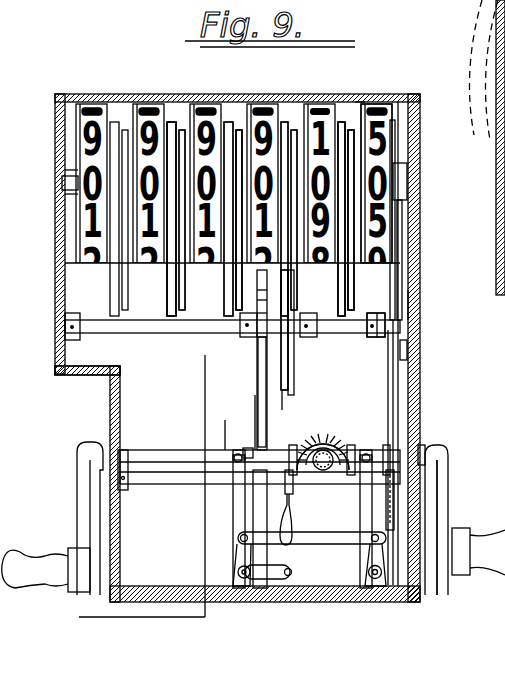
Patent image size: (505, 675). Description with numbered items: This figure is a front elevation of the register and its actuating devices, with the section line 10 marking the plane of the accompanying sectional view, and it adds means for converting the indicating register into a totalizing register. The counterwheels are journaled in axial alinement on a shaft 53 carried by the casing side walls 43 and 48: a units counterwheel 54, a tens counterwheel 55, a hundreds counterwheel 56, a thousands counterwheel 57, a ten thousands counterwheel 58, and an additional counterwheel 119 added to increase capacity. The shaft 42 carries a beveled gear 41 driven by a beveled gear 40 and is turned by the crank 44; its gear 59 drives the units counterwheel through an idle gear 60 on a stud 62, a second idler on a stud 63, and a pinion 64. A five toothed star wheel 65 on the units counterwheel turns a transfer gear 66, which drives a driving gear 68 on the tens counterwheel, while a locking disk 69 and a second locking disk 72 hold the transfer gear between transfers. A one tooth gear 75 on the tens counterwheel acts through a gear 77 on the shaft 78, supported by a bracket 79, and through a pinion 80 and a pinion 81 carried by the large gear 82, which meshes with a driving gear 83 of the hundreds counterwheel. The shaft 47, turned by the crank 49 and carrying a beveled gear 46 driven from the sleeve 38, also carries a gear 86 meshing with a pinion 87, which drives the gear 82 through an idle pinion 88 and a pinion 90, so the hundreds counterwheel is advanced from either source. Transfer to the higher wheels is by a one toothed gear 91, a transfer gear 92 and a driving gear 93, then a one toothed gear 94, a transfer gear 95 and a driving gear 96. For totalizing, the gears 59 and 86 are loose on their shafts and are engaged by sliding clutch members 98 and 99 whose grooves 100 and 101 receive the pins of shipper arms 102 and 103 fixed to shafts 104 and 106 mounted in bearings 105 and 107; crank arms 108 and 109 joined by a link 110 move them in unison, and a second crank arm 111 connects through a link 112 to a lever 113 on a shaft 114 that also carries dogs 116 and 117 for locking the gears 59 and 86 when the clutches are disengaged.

The section line 10 is at (133, 479).
The hollow shaft or sleeve 38 is at (323, 452).
The beveled gear 40 is at (312, 442).
The beveled gear 41 is at (348, 448).
The shaft 42 is at (422, 445).
The frame member or side wall 43 is at (410, 378).
The operating handle or crank 44 is at (440, 500).
The beveled gear 46 is at (294, 445).
The shaft 47 is at (154, 460).
The second frame member or casing wall 48 is at (82, 375).
The operating handle or crank 49 is at (52, 518).
The shaft 53 is at (62, 182).
The units counterwheel 54 is at (388, 112).
The tens counterwheel 55 is at (340, 122).
The hundreds counterwheel 56 is at (266, 108).
The thousands counterwheel 57 is at (206, 110).
The ten thousands counterwheel 58 is at (147, 110).
The gear 59 is at (400, 405).
The idle gear 60 is at (410, 305).
The stud 62 is at (405, 352).
The stud 63 is at (400, 258).
The pinion 64 is at (400, 172).
The five toothed star wheel 65 is at (360, 94).
The transfer gear 66 is at (339, 299).
The driving gear 68 is at (350, 130).
The locking disk 69 is at (372, 104).
The second locking disk 72 is at (354, 300).
The one tooth gear 75 is at (293, 130).
The gear 77 is at (294, 368).
The shaft 78 is at (150, 334).
The bracket 79 is at (380, 337).
The pinion 80 is at (288, 350).
The pinion 81 is at (288, 285).
The large gear 82 is at (284, 398).
The driving gear 83 is at (283, 130).
The gear 86 is at (255, 398).
The pinion 87 is at (262, 345).
The idle pinion 88 is at (258, 325).
The pinion 90 is at (248, 318).
The one toothed transfer gear 91 is at (239, 130).
The transfer gear 92 is at (236, 299).
The driving gear 93 is at (224, 270).
The one toothed gear 94 is at (173, 122).
The transfer gear 95 is at (179, 299).
The driving gear 96 is at (167, 270).
The clutch member 98 is at (388, 445).
The clutch member 99 is at (246, 448).
The peripheral groove 100 is at (366, 450).
The peripheral groove 101 is at (236, 452).
The shipper arm 102 is at (362, 512).
The shipper arm 103 is at (233, 512).
The shaft 104 is at (384, 575).
The bearings 105 is at (363, 565).
The shaft 106 is at (238, 566).
The bearings 107 is at (236, 580).
The crank arm 108 is at (420, 560).
The crank arm 109 is at (238, 538).
The link 110 is at (330, 545).
The second crank arm 111 is at (268, 573).
The link 112 is at (290, 520).
The lever 113 is at (293, 492).
The shaft 114 is at (162, 478).
The dog 116 is at (395, 508).
The dog 117 is at (257, 496).
The additional counterwheel 119 is at (90, 108).